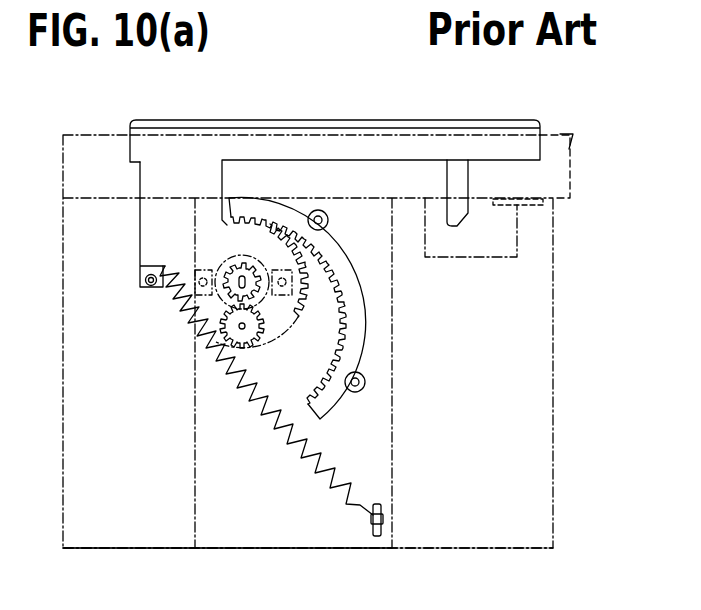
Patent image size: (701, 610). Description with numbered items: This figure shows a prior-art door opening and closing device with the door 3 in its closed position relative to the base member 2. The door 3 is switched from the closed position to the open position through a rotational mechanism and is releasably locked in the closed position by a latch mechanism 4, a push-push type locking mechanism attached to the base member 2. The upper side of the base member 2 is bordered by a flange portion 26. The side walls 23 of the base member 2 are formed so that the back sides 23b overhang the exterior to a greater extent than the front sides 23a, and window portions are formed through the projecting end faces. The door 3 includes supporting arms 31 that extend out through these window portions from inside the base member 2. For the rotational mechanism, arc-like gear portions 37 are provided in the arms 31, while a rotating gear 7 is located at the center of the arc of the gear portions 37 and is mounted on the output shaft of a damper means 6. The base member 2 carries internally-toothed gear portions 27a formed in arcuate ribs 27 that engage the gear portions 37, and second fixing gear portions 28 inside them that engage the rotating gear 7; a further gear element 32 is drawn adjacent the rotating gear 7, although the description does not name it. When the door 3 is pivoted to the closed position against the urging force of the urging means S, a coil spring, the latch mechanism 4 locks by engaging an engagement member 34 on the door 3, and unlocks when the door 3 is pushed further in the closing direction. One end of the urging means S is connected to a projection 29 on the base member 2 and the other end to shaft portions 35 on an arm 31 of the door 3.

The base member 2 is at (553, 270).
The door 3 is at (500, 123).
The latch mechanism 4 is at (505, 233).
The damper means 6 is at (182, 279).
The rotating gear 7 is at (233, 270).
The side walls 23 is at (308, 572).
The front sides 23a is at (157, 535).
The back sides 23b is at (347, 538).
The flange portion 26 is at (573, 141).
The arcuate ribs 27 is at (341, 308).
The internally-toothed gear portions 27a is at (336, 356).
The second fixing gear portions 28 is at (319, 470).
The projection 29 is at (380, 537).
The supporting arms 31 is at (155, 222).
The intermediate gear 32 is at (212, 311).
The engagement member 34 is at (462, 175).
The shaft portions 35 is at (148, 290).
The arc-like gear portions 37 is at (305, 308).
The urging means S is at (266, 438).